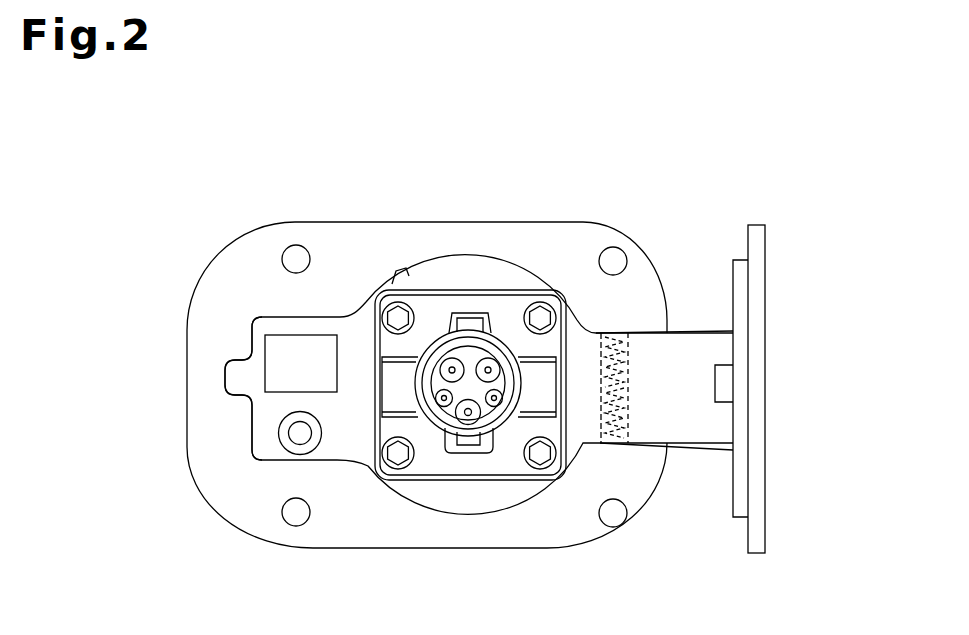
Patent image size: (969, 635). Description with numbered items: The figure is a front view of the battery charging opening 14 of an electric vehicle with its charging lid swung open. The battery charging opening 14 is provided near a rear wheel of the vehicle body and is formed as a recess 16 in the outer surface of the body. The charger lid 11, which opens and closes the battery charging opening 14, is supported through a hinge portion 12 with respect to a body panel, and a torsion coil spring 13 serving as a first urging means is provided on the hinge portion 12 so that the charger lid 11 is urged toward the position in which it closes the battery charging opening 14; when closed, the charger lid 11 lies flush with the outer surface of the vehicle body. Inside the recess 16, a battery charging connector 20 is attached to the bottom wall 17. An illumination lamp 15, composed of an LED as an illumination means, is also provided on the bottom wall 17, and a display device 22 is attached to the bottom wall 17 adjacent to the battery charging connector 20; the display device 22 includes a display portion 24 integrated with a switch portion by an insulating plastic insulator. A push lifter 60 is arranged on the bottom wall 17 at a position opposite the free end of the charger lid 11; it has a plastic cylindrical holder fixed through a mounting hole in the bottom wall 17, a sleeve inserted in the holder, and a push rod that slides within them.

The charger lid 11 is at (765, 272).
The hinge portion 12 is at (630, 411).
The torsion coil spring 13 is at (630, 362).
The battery charging opening 14 is at (597, 186).
The illumination lamp 15 is at (393, 272).
The recess 16 is at (527, 223).
The bottom wall 17 is at (334, 461).
The battery charging connector 20 is at (448, 431).
The display device 22 is at (296, 346).
The display portion 24 is at (280, 343).
The push lifter 60 is at (297, 432).